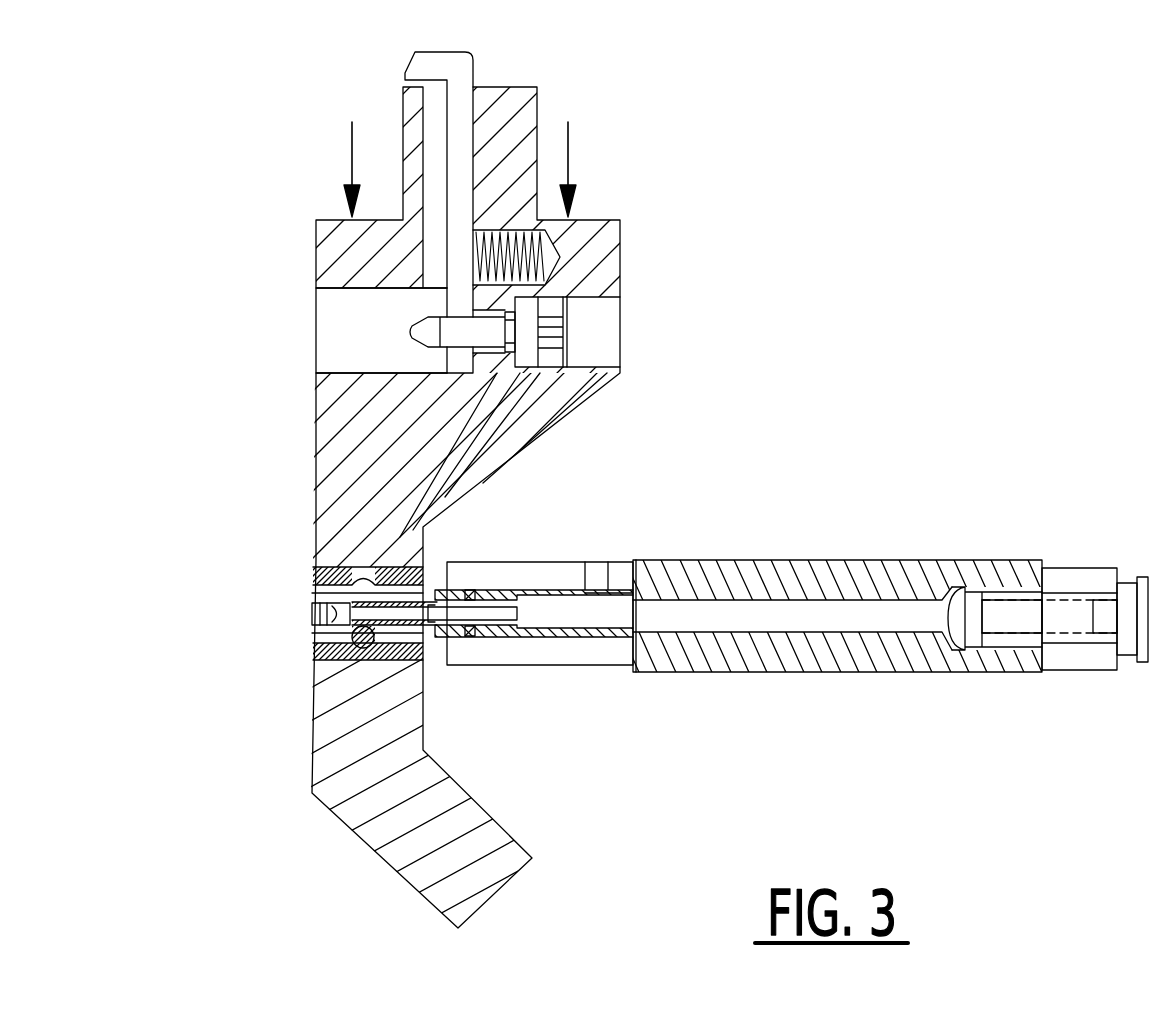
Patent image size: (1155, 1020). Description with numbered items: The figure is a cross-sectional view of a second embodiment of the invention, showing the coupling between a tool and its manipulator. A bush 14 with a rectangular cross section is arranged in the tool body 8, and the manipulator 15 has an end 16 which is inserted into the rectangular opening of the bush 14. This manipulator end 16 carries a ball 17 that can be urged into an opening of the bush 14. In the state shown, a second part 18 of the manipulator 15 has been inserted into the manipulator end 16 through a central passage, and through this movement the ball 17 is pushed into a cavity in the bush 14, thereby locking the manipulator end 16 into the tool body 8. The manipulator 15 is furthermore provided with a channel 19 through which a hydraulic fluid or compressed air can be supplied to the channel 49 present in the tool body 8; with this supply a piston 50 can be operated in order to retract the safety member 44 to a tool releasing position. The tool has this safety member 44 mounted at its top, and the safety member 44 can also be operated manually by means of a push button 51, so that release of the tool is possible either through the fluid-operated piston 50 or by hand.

The tool body 8 is at (327, 503).
The bush 14 is at (312, 649).
The manipulator 15 is at (665, 592).
The manipulator end 16 is at (515, 567).
The ball 17 is at (312, 636).
The second part 18 is at (790, 662).
The channel 19 is at (900, 625).
The safety member 44 is at (457, 127).
The channel 49 is at (496, 391).
The piston 50 is at (553, 327).
The push button 51 is at (330, 313).